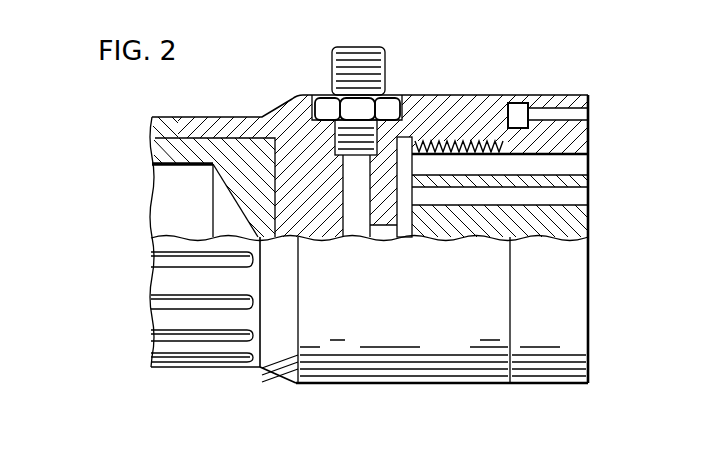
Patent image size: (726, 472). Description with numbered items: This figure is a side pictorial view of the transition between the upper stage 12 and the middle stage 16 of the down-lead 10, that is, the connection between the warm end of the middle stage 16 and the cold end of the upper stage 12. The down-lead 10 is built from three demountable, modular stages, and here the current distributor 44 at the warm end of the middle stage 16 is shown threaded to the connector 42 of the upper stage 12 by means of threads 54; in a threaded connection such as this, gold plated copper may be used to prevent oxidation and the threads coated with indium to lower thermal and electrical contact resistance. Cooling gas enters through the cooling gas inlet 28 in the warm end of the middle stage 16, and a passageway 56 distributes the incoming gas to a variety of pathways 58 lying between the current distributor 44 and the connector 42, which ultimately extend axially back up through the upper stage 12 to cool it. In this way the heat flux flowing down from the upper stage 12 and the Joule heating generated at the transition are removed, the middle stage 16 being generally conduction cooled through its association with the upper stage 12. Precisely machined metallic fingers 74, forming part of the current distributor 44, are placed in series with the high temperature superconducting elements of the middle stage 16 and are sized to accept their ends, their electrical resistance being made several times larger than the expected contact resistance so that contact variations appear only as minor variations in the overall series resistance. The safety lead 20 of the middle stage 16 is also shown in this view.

The down-lead 10 is at (618, 101).
The upper stage 12 is at (604, 290).
The middle stage 16 is at (394, 394).
The safety lead 20 is at (169, 151).
The cooling gas inlet 28 is at (343, 68).
The connector 42 is at (547, 380).
The current distributor 44 is at (349, 383).
The threads 54 is at (470, 142).
The passageway 56 is at (347, 223).
The pathways 58 is at (568, 157).
The metallic fingers 74 is at (222, 117).